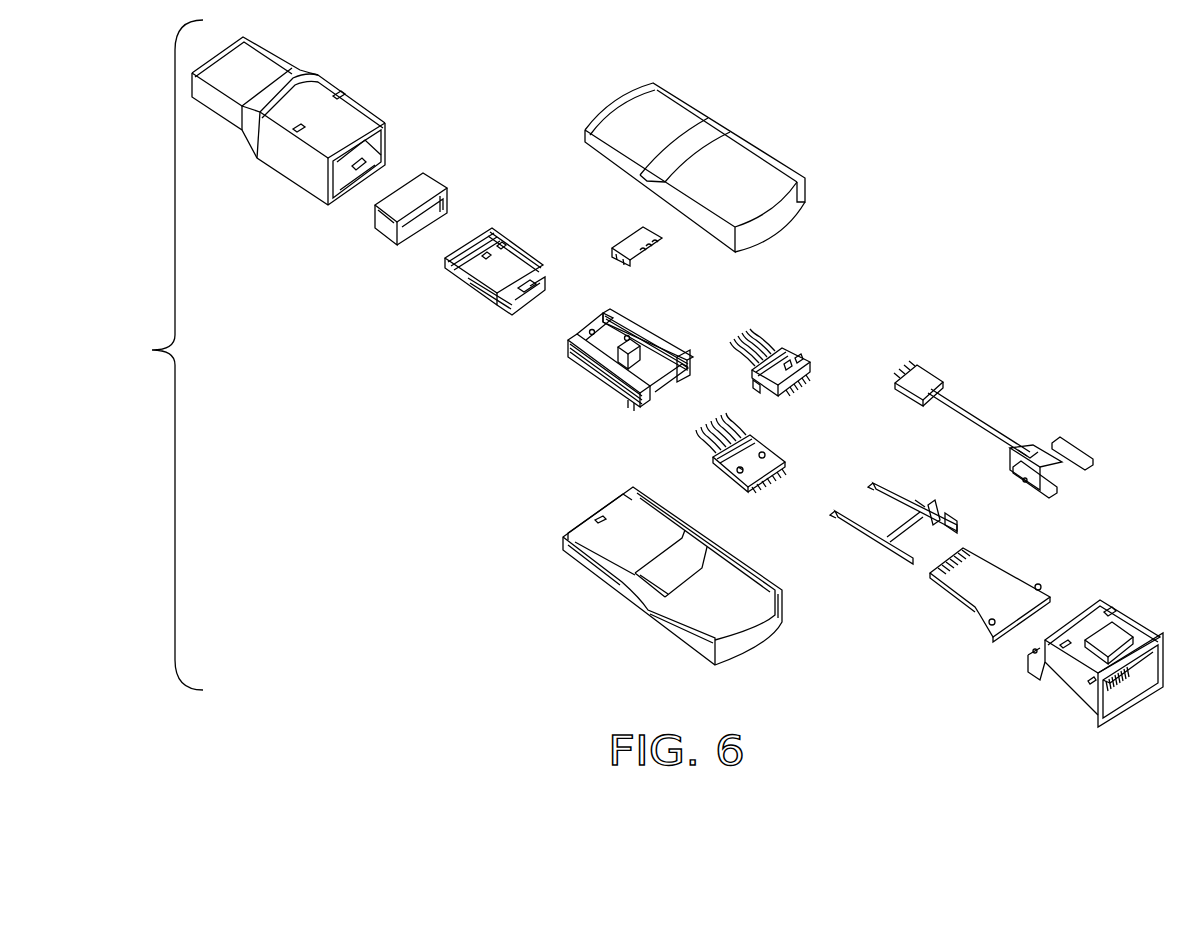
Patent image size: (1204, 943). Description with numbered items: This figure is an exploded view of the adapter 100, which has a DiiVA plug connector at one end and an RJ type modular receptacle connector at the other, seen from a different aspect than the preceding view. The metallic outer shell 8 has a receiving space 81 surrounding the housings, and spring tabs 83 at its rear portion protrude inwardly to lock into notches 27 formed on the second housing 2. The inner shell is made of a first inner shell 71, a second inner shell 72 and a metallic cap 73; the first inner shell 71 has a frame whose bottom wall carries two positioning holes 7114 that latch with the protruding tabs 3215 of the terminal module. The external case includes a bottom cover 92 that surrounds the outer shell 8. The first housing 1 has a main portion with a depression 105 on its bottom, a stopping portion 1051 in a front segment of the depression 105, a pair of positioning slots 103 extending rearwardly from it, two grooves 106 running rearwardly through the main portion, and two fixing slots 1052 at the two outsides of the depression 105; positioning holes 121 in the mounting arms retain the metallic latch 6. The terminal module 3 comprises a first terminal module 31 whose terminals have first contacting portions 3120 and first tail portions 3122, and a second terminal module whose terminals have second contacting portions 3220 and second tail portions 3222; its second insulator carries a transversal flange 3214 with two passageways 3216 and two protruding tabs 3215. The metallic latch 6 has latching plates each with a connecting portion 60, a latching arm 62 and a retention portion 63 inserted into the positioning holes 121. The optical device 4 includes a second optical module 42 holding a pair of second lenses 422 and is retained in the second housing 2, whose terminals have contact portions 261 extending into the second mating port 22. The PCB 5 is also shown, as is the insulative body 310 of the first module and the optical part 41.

The adapter 100 is at (154, 355).
The metallic outer shell 8 is at (327, 121).
The spring tabs 83 is at (355, 100).
The receiving space 81 is at (345, 163).
The second inner shell 72 is at (440, 172).
The first inner shell 71 is at (505, 273).
The positioning holes 7114 is at (508, 285).
The metallic cap 73 is at (645, 247).
The bottom cover 92 is at (763, 123).
The first housing 1 is at (612, 349).
The grooves 106 is at (602, 370).
The fixing slots 1052 is at (568, 342).
The depression 105 is at (610, 332).
The positioning slots 103 is at (628, 328).
The stopping portion 1051 is at (591, 329).
The positioning holes 121 is at (687, 370).
The terminal module 3 is at (796, 349).
The second contacting portions 3220 is at (748, 338).
The passageways 3216 is at (817, 377).
The transversal flange 3214 is at (755, 380).
The protruding tabs 3215 is at (787, 360).
The second tail portions 3222 is at (803, 360).
The first terminal module 31 is at (741, 451).
The first contacting portions 3120 is at (693, 440).
The first tail portions 3122 is at (782, 463).
The insulative body 310 is at (740, 470).
The optical device 4 is at (1032, 409).
The latch head 41 is at (923, 380).
The second optical module 42 is at (1042, 463).
The second lenses 422 is at (1077, 471).
The metallic latch 6 is at (932, 500).
The latching arm 62 is at (938, 512).
The connecting portion 60 is at (963, 530).
The retention portion 63 is at (918, 505).
The PCB 5 is at (1010, 562).
The second housing 2 is at (1116, 651).
The contact portions 261 is at (1140, 682).
The second mating port 22 is at (1122, 697).
The notches 27 is at (1110, 612).